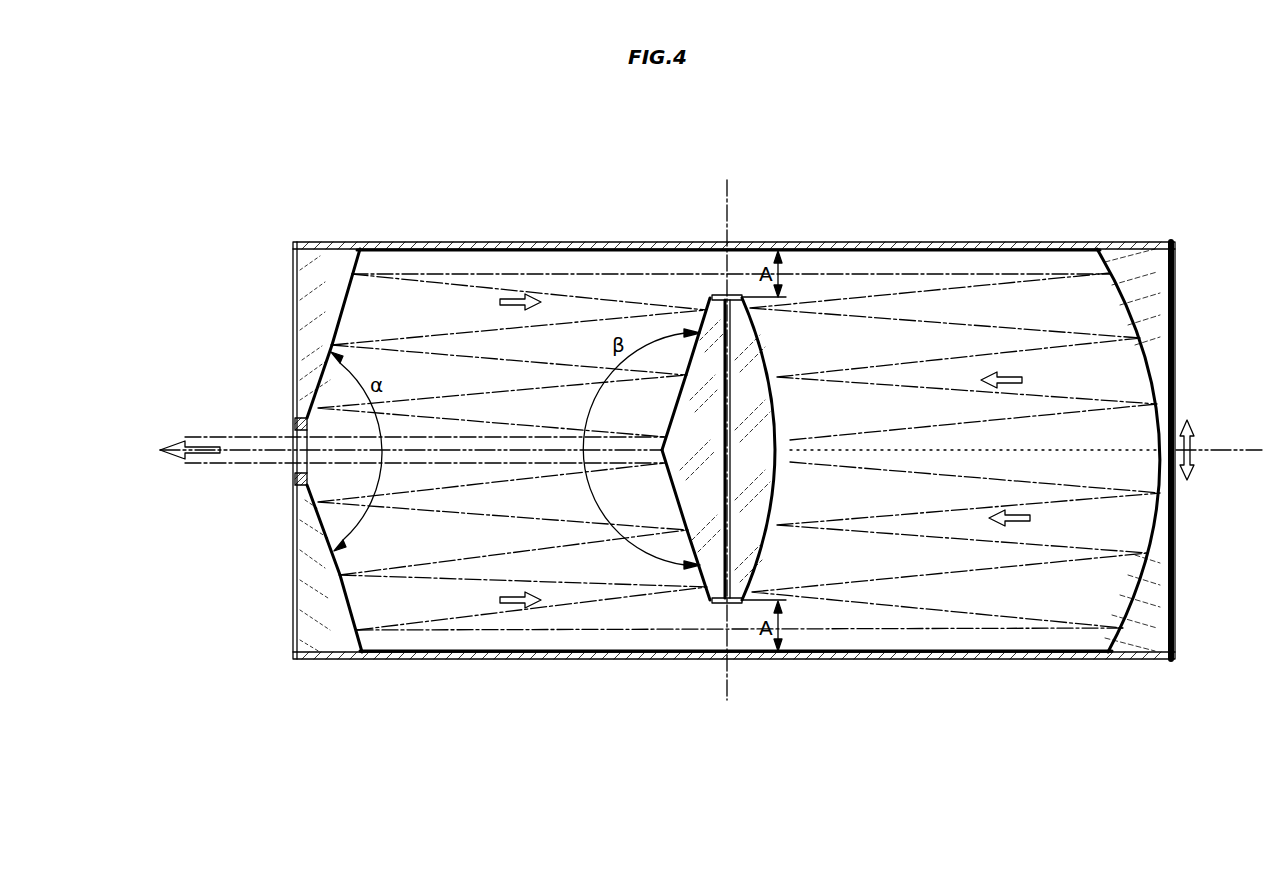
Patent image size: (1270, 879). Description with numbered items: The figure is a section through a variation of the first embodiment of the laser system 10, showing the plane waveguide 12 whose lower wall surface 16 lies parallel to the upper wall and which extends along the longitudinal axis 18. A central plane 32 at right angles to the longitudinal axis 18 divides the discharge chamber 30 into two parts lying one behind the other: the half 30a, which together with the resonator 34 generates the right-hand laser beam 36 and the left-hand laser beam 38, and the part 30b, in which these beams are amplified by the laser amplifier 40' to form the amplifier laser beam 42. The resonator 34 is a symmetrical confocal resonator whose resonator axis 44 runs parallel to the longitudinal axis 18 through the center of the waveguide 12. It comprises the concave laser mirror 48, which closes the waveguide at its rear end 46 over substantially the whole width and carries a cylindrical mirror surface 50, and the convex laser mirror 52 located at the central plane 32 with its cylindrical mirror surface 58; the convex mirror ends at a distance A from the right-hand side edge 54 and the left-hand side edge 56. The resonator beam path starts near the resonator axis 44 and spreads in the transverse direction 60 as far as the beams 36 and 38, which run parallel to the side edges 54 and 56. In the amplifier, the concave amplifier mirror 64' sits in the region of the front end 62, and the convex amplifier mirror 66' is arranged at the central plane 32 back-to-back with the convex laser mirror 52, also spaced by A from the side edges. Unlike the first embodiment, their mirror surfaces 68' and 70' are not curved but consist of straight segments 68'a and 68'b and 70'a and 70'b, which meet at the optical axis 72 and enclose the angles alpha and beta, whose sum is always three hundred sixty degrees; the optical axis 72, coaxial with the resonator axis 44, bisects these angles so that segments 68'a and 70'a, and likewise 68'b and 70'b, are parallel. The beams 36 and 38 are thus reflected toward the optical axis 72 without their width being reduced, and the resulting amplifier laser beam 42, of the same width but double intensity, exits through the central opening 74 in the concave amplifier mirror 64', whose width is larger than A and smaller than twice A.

The laser system 10 is at (960, 236).
The plane waveguide 12 is at (625, 236).
The lower wall surface 16 is at (655, 615).
The longitudinal axis 18 is at (1219, 477).
The discharge chamber 30 is at (1045, 585).
The half of the discharge chamber 30a is at (580, 576).
The part of the discharge chamber 30b is at (457, 308).
The central plane 32 is at (729, 188).
The resonator 34 is at (1028, 308).
The right-hand laser beam 36 is at (865, 270).
The left-hand laser beam 38 is at (838, 626).
The laser amplifier 40' is at (529, 244).
The amplifier laser beam 42 is at (215, 485).
The optical axis 44 is at (1060, 450).
The rear end 46 is at (1165, 540).
The concave laser mirror 48 is at (1143, 308).
The cylindrical mirror surface 50 is at (1150, 380).
The convex laser mirror 52 is at (732, 449).
The right-hand side edge 54 is at (905, 250).
The left-hand side edge 56 is at (918, 650).
The cylindrical mirror surface 58 is at (788, 414).
The transverse direction 60 is at (1190, 440).
The front end 62 is at (288, 462).
The concave amplifier mirror 64' is at (273, 381).
The convex amplifier mirror 66' is at (651, 490).
The mirror surface 68' is at (294, 530).
The straight segment 68'a is at (295, 625).
The straight segment 68'b is at (292, 297).
The mirror surface 70' is at (653, 412).
The straight segment 70'a is at (661, 549).
The straight segment 70'b is at (666, 352).
The optical axis 72 is at (468, 460).
The central opening 74 is at (301, 430).